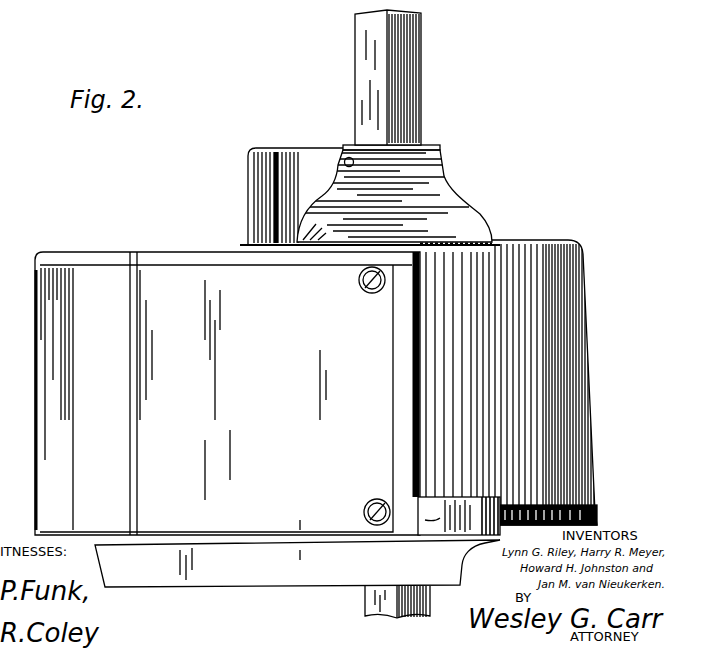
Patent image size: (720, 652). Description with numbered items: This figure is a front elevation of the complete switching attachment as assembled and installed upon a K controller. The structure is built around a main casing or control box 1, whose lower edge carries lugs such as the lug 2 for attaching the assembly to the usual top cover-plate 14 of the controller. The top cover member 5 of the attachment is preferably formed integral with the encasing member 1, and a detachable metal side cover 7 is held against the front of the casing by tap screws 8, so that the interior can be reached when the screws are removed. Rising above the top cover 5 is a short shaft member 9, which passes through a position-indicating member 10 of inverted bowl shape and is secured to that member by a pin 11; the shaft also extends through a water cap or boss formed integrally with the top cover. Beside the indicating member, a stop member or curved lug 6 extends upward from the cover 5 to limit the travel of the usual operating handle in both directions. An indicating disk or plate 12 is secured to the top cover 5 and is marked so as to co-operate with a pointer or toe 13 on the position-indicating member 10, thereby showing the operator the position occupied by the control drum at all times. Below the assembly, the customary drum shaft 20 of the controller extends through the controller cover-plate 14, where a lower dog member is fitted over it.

The main casing or control box 1 is at (584, 412).
The lug 2 is at (462, 528).
The top cover member 5 is at (126, 252).
The stop member or curved lug 6 is at (258, 178).
The detachable metal side cover 7 is at (45, 422).
The tap screws 8 is at (362, 290).
The short shaft member 9 is at (421, 57).
The position-indicating member 10 is at (465, 204).
The pin 11 is at (348, 157).
The indicating disk or plate 12 is at (511, 241).
The pointer or toe 13 is at (319, 236).
The top cover-plate 14 is at (233, 588).
The drum shaft 20 is at (380, 604).